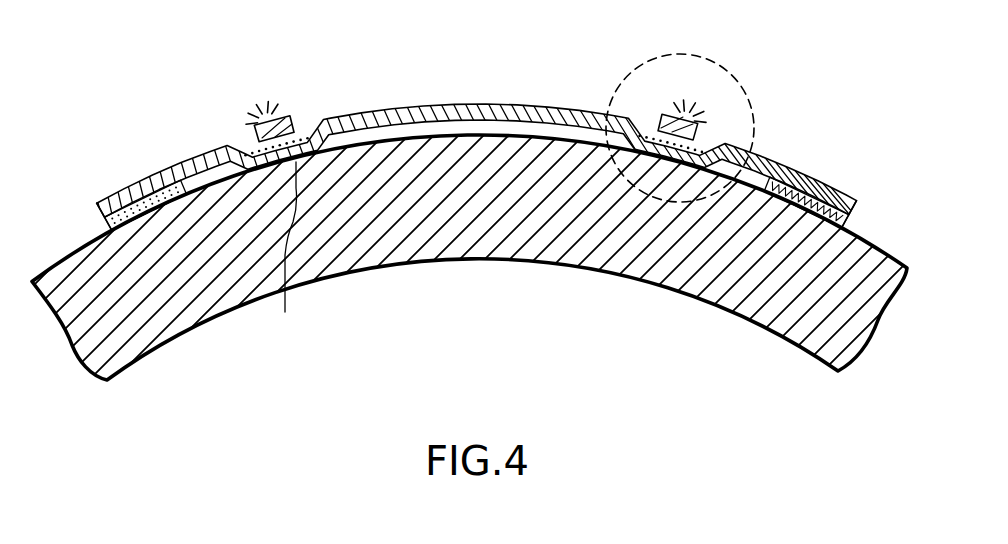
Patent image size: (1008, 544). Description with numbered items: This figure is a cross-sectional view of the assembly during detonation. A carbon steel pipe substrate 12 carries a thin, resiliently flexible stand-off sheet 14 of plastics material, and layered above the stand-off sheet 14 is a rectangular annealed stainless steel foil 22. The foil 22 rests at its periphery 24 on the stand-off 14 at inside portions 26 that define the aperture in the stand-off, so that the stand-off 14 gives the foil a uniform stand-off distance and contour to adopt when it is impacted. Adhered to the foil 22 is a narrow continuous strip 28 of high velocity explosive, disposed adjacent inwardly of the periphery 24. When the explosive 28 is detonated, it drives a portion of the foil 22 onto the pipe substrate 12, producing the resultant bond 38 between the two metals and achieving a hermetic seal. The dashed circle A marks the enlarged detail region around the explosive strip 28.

The pipe substrate 12 is at (805, 330).
The stand-off sheet 14 is at (115, 212).
The foil 22 is at (367, 117).
The periphery of foil 24 is at (157, 182).
The inside portions of stand-off 26 is at (828, 200).
The explosive strip 28 is at (272, 117).
The bond 38 is at (286, 255).
The enlarged detail area A is at (749, 99).